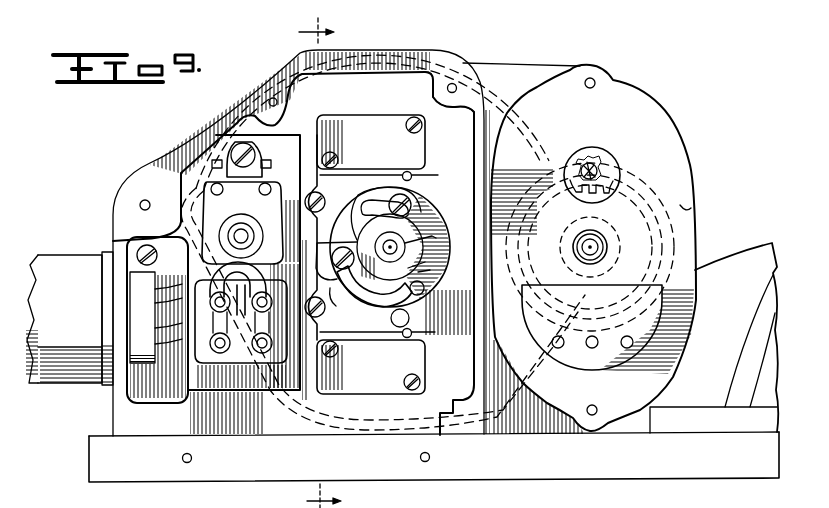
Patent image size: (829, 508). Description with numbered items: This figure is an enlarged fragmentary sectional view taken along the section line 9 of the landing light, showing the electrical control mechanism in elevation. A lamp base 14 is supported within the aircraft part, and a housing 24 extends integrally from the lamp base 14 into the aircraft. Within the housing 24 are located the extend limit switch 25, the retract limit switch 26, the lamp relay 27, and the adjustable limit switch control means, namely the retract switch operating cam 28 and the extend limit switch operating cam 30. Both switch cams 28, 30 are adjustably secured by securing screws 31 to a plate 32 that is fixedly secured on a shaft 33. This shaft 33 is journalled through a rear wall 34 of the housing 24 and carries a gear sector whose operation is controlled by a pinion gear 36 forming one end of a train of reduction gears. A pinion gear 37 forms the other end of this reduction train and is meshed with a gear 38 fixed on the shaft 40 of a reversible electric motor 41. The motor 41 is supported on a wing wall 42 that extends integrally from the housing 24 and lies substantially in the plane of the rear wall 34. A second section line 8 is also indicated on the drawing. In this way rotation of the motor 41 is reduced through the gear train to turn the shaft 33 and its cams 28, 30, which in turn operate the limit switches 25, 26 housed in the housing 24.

The section line 8- 8 is at (327, 263).
The section line 9— 9 is at (767, 507).
The lamp base 14 is at (507, 467).
The housing 24 is at (232, 130).
The extend limit switch 25 is at (385, 125).
The retract limit switch 26 is at (425, 368).
The lamp relay 27 is at (217, 213).
The retract switch operating cam 28 is at (447, 257).
The extend limit switch operating cam 30 is at (417, 320).
The securing screws 31 is at (412, 201).
The plate 32 is at (425, 222).
The shaft 33 is at (404, 250).
The rear wall 34 is at (460, 100).
The pinion gear 36 is at (686, 183).
The pinion gear 37 is at (597, 171).
The gear 38 is at (613, 187).
The shaft 40 is at (601, 248).
The reversible electric motor 41 is at (691, 208).
The wing wall 42 is at (553, 76).